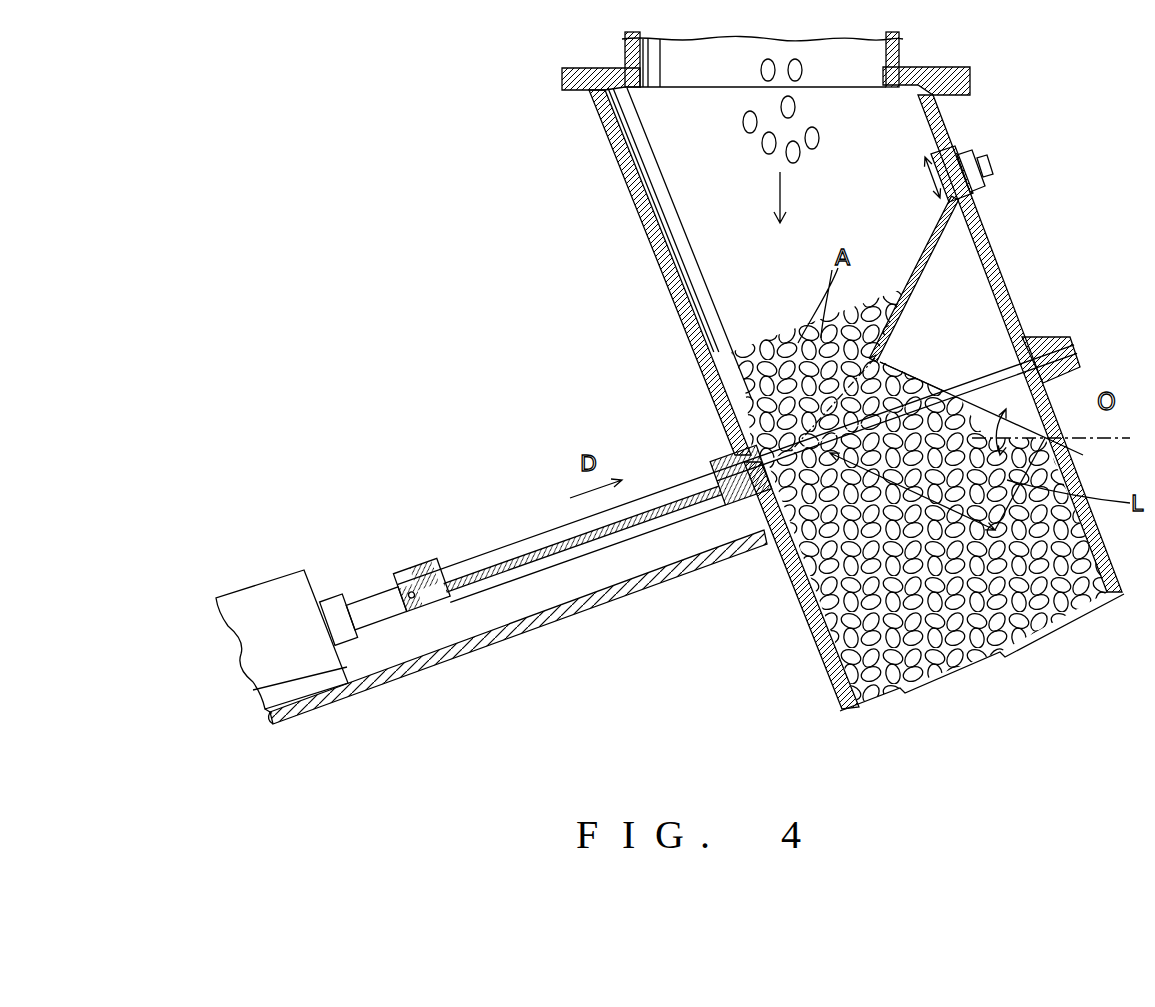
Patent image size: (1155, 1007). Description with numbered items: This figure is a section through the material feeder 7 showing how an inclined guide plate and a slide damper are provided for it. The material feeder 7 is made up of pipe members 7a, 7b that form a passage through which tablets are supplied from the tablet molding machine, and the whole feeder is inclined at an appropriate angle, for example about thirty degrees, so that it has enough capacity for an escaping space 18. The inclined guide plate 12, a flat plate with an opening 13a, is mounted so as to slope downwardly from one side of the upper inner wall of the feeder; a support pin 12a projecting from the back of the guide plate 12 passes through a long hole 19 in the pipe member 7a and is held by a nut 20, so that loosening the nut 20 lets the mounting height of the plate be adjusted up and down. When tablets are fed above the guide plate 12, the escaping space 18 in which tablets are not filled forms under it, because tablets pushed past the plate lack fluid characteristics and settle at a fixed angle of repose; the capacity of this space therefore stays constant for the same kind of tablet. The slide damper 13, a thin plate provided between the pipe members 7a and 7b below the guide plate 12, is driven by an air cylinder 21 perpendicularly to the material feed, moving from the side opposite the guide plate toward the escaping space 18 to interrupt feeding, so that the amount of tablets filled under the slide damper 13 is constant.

The material feeder 7 is at (672, 350).
The pipe member 7a is at (662, 270).
The pipe member 7b is at (823, 663).
The inclined guide plate 12 is at (922, 260).
The support pin 12a is at (990, 160).
The slide damper 13 is at (702, 474).
The opening 13a is at (938, 385).
The escaping space 18 is at (980, 345).
The long hole 19 is at (970, 194).
The nut 20 is at (968, 158).
The air cylinder 21 is at (298, 588).